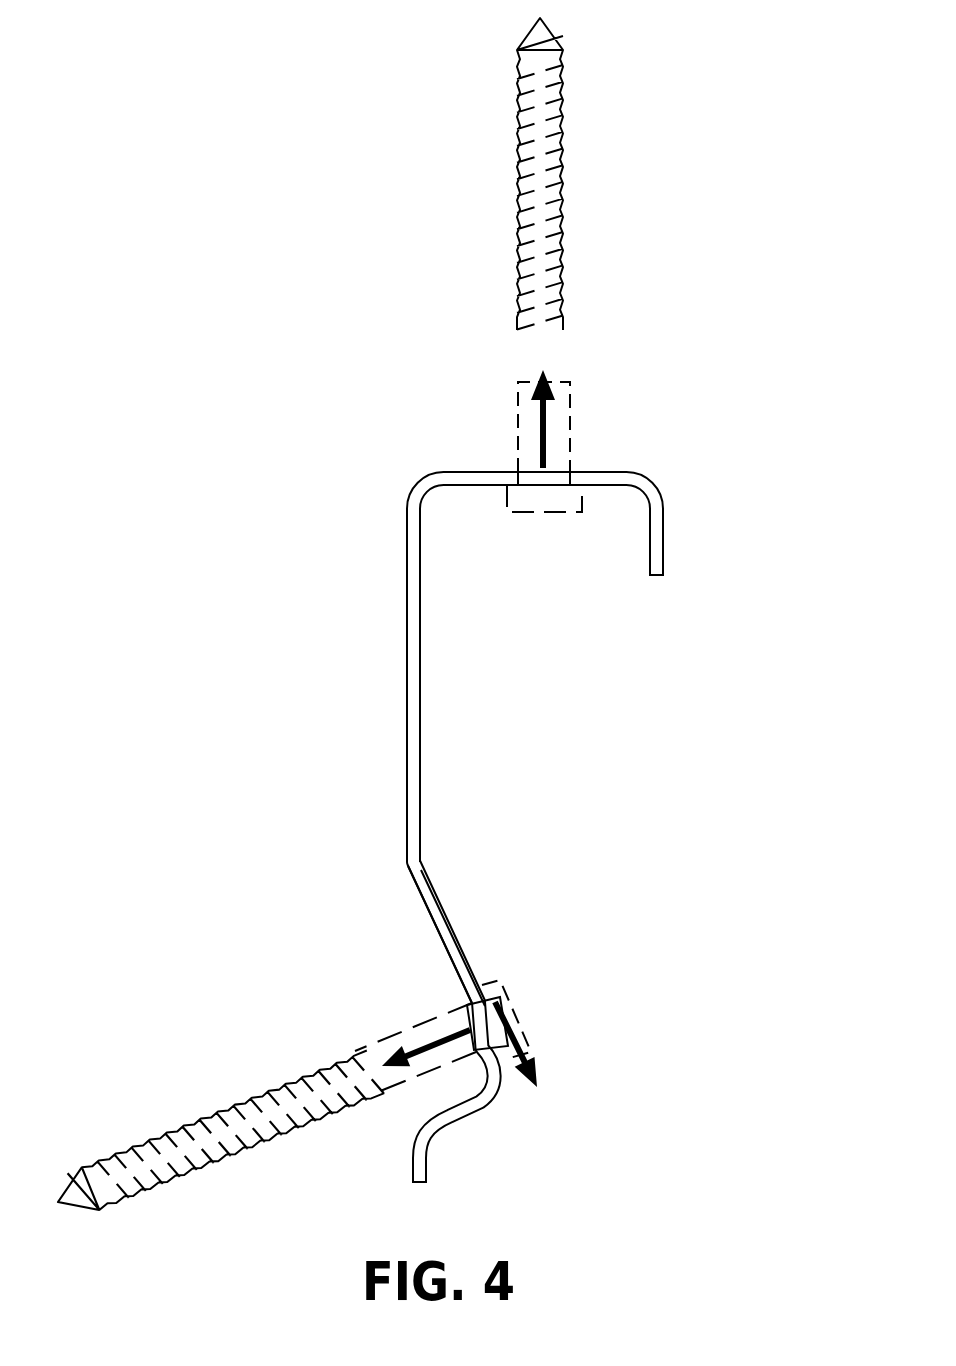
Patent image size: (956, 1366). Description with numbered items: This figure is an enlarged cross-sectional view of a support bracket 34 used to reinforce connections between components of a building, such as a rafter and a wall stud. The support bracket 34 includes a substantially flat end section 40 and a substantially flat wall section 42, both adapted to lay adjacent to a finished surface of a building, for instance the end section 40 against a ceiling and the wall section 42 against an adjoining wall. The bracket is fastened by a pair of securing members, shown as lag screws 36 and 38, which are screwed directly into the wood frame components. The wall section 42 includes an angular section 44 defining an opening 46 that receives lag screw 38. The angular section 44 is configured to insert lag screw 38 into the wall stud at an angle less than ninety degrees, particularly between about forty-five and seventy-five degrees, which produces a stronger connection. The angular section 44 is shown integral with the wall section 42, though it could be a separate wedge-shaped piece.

The support bracket 34 is at (407, 675).
The lag screw 36 is at (555, 182).
The lag screw 38 is at (187, 1127).
The end section 40 is at (617, 470).
The wall section 42 is at (407, 780).
The angular section 44 is at (463, 958).
The opening 46 is at (467, 1003).